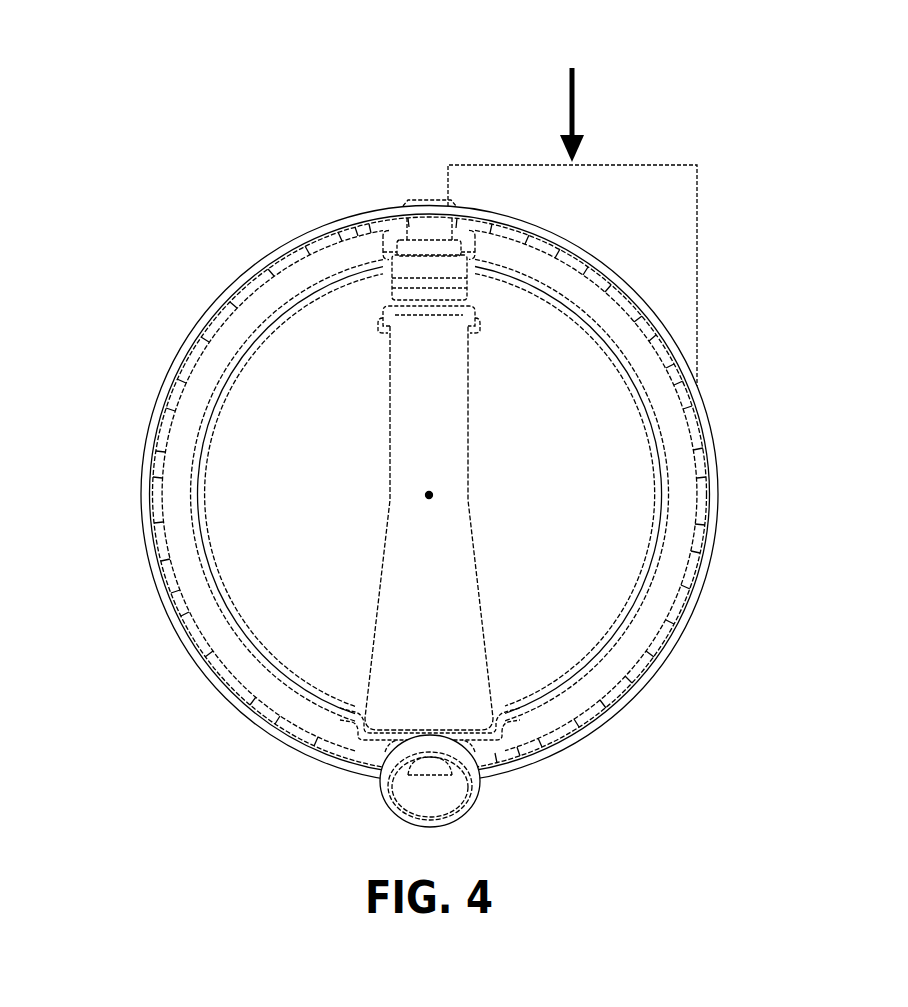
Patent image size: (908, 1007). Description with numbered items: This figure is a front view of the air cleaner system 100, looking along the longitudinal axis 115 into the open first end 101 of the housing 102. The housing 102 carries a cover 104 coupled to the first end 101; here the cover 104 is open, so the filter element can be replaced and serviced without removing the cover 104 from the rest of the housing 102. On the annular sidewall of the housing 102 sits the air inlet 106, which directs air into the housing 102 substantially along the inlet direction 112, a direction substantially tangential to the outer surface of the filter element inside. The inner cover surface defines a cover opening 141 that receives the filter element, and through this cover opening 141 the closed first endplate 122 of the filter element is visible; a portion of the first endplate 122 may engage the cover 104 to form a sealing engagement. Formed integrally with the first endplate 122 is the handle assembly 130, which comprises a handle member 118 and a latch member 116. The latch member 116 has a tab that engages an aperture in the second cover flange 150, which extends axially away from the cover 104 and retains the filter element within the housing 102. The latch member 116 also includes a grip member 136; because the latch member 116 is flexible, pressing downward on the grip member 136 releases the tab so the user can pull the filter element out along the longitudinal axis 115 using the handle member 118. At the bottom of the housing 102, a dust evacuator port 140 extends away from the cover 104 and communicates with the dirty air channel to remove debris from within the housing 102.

The air cleaner system 100 is at (804, 119).
The first end 101 is at (656, 711).
The housing 102 is at (258, 263).
The cover 104 is at (683, 353).
The air inlet 106 is at (657, 165).
The inlet direction 112 is at (570, 107).
The longitudinal axis 115 is at (429, 494).
The latch member 116 is at (440, 270).
The handle member 118 is at (458, 588).
The first endplate 122 is at (608, 452).
The handle assembly 130 is at (357, 578).
The grip member 136 is at (468, 288).
The dust evacuator port 140 is at (473, 805).
The cover opening 141 is at (221, 381).
The second cover flange 150 is at (387, 209).